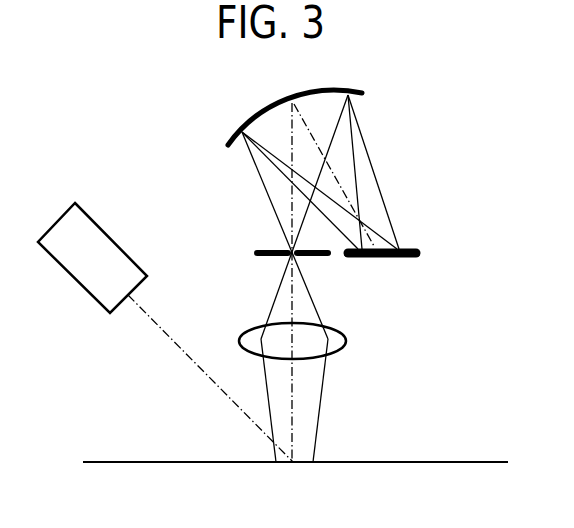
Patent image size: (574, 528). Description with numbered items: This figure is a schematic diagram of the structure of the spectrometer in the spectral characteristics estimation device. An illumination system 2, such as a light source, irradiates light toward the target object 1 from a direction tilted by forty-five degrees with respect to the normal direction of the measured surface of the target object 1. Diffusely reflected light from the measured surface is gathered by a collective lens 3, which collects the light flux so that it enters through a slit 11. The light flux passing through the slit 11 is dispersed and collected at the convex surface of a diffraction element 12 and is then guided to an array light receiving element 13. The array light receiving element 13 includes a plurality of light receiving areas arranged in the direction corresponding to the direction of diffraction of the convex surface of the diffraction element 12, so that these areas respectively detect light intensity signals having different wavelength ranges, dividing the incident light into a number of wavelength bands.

The target object 1 is at (461, 461).
The illumination system 2 is at (74, 283).
The collective lens 3 is at (347, 340).
The slit 11 is at (251, 252).
The diffraction element 12 is at (263, 111).
The array light receiving element 13 is at (407, 248).